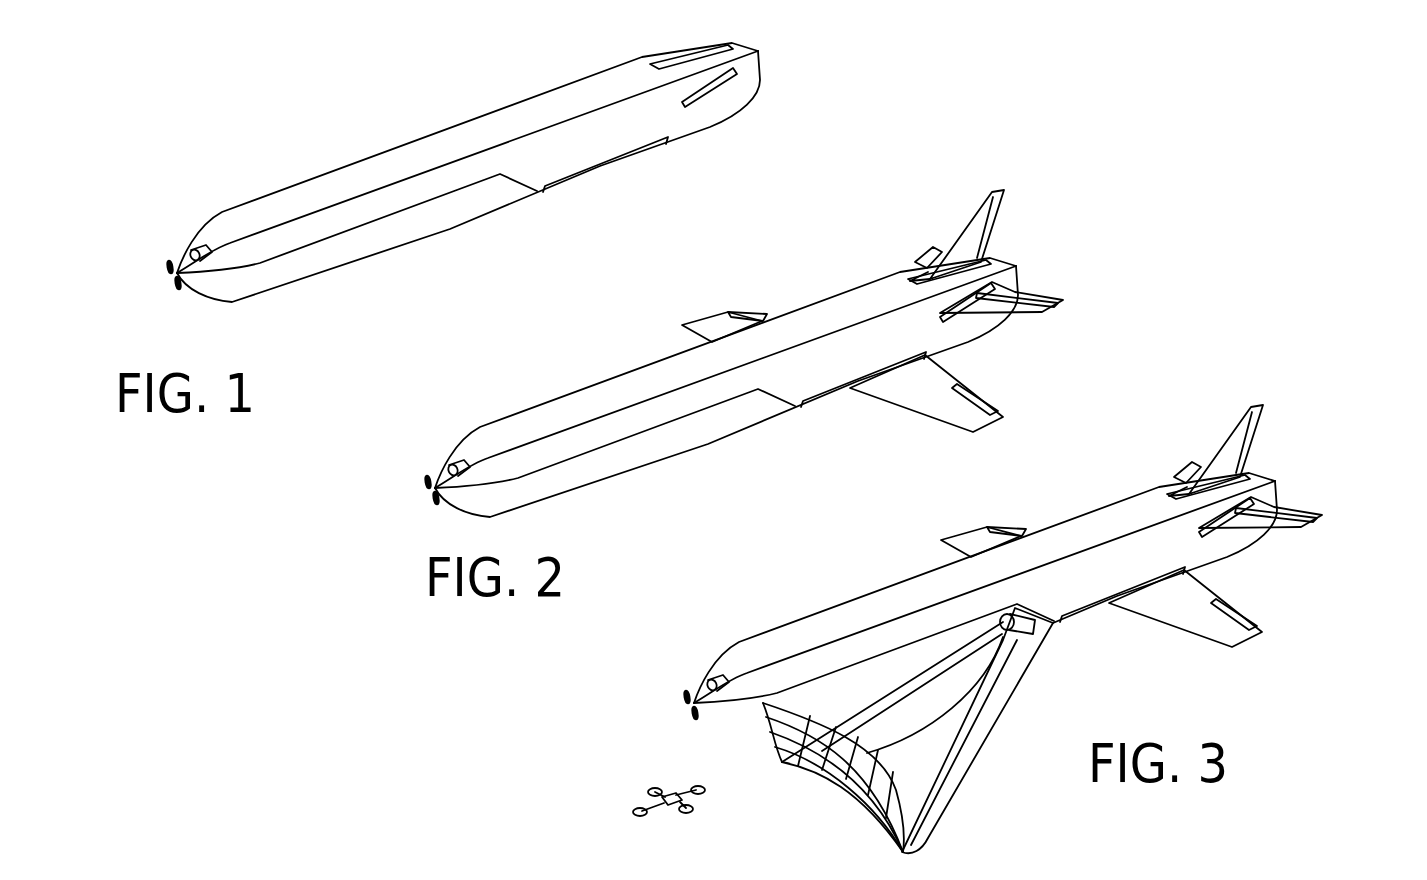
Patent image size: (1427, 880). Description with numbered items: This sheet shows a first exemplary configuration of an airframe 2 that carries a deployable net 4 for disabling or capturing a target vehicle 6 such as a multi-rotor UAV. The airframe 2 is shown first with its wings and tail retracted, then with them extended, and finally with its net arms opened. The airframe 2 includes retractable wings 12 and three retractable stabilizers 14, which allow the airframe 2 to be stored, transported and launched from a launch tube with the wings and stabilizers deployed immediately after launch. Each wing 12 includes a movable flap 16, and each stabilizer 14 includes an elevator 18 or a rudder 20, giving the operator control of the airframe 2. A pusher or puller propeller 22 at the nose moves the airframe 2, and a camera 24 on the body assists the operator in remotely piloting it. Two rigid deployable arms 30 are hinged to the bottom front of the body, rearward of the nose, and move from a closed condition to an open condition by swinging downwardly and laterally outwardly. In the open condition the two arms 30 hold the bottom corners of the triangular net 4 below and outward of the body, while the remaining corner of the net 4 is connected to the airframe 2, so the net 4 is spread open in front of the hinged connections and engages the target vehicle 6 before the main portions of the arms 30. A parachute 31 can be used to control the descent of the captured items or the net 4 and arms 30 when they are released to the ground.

In FIG. 1, the airframe 2 is at (402, 128).
In FIG. 3, the deployable net 4 is at (850, 777).
In FIG. 3, the target vehicle 6 is at (638, 786).
In FIG. 2, the retractable wings 12 is at (703, 329).
In FIG. 3, the retractable wings 12 is at (1090, 577).
In FIG. 2, the retractable stabilizers 14 is at (972, 212).
In FIG. 3, the retractable stabilizers 14 is at (1223, 476).
In FIG. 2, the movable flap 16 is at (752, 313).
In FIG. 3, the movable flap 16 is at (1150, 543).
In FIG. 2, the elevator 18 is at (1063, 301).
In FIG. 3, the elevator 18 is at (1296, 507).
In FIG. 2, the rudder 20 is at (1004, 191).
In FIG. 3, the rudder 20 is at (1243, 443).
In FIG. 1, the propeller 22 is at (168, 275).
In FIG. 2, the propeller 22 is at (386, 490).
In FIG. 3, the propeller 22 is at (645, 705).
In FIG. 1, the camera 24 is at (198, 246).
In FIG. 2, the camera 24 is at (471, 427).
In FIG. 3, the camera 24 is at (730, 642).
In FIG. 1, the deployable arm 30 is at (436, 222).
In FIG. 2, the deployable arm 30 is at (680, 428).
In FIG. 3, the deployable arm 30 is at (868, 704).
In FIG. 3, the parachute 31 is at (1030, 632).